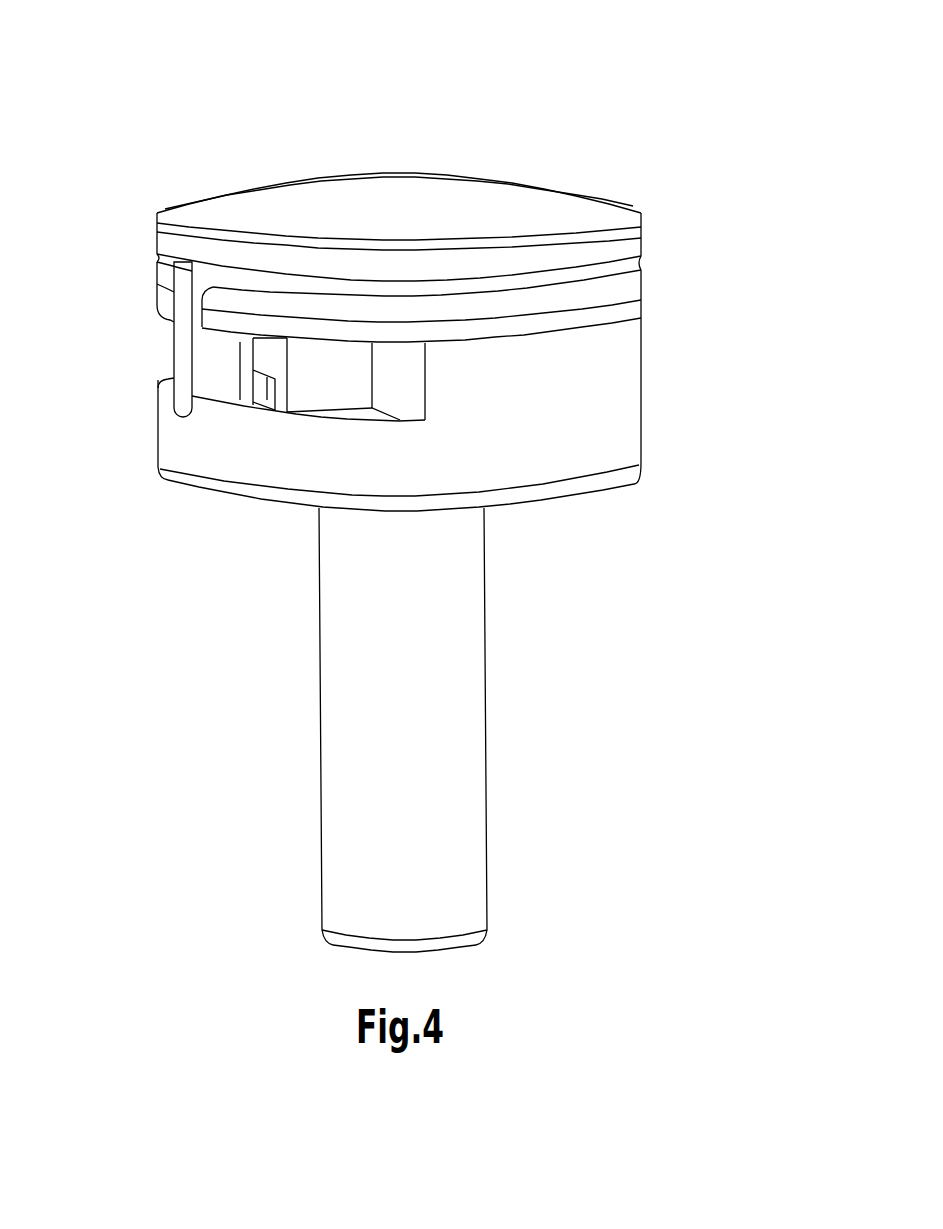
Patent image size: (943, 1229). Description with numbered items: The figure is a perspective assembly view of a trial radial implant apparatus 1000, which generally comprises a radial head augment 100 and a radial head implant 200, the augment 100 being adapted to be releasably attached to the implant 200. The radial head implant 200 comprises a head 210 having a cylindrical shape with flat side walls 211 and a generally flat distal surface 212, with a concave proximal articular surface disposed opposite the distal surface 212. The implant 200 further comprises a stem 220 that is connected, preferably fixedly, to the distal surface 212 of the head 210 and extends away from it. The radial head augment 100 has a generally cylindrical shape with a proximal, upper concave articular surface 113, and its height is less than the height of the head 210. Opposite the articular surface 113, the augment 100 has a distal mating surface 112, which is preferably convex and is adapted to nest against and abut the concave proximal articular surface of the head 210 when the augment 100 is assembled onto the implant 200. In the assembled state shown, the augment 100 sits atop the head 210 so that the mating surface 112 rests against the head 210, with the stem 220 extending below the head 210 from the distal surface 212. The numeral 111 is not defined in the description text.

The trial radial implant apparatus 1000 is at (436, 512).
The radial head augment 100 is at (418, 252).
The upper disc of cap 111 is at (343, 184).
The distal mating surface 112 is at (158, 263).
The proximal concave articular surface 113 is at (222, 207).
The radial head implant 200 is at (437, 611).
The head 210 is at (405, 420).
The side walls 211 is at (640, 382).
The distal surface 212 is at (560, 500).
The stem 220 is at (487, 758).